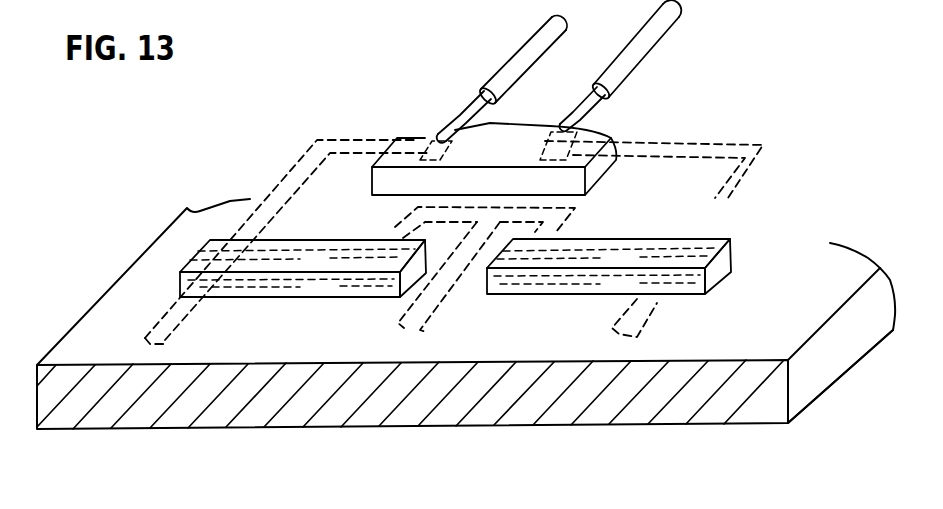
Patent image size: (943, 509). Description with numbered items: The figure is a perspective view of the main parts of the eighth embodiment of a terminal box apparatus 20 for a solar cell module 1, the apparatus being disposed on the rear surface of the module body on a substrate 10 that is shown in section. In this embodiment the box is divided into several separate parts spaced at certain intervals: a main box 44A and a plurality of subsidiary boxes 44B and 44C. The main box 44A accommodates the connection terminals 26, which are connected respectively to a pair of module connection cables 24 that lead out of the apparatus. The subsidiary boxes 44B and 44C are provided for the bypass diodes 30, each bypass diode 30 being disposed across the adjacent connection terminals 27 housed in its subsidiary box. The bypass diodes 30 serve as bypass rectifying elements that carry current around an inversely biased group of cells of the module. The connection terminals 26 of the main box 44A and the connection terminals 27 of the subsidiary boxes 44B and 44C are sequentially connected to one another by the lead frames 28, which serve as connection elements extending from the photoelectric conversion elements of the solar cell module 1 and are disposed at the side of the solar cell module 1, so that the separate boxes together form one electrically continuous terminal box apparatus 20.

The solar cell module 1 is at (107, 291).
The substrate side face 10 is at (838, 337).
The terminal box apparatus 20 is at (777, 128).
The module connection cable 24 is at (527, 46).
The connection terminal 26 is at (458, 121).
The connection terminal 27 is at (232, 300).
The lead frame 28 is at (295, 150).
The bypass diode 30 is at (295, 300).
The main box 44A is at (602, 162).
The subsidiary box 44B is at (303, 249).
The subsidiary box 44C is at (714, 267).